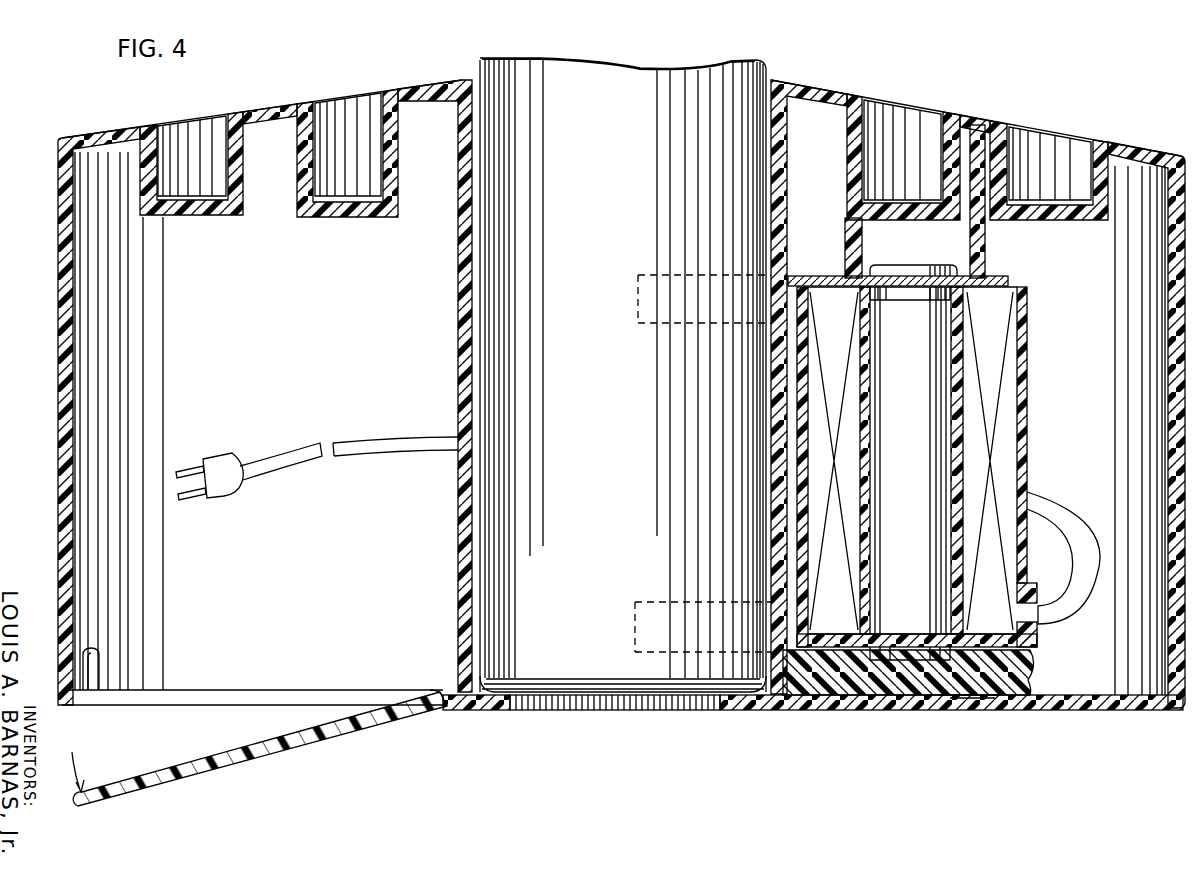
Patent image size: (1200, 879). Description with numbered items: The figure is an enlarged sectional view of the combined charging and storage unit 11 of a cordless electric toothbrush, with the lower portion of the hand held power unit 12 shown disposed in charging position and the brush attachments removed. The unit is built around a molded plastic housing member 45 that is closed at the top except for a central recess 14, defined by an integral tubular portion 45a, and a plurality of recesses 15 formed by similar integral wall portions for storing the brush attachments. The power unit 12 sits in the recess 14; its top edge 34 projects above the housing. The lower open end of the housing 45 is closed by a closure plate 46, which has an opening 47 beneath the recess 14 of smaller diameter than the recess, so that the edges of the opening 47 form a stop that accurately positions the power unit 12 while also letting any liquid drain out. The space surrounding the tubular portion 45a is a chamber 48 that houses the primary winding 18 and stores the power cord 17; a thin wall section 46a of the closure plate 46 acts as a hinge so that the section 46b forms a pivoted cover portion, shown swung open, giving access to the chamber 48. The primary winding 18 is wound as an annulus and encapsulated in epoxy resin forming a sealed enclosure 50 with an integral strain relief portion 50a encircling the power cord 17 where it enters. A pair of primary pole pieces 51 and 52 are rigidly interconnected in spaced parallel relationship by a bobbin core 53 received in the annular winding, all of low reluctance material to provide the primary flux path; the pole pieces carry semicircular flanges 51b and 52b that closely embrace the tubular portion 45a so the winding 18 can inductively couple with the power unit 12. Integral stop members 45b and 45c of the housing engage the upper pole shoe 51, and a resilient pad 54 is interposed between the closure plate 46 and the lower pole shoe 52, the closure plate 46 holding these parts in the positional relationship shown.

The combined charging and storage unit 11 is at (664, 747).
The hand held power unit 12 is at (515, 58).
The recess 14 is at (478, 92).
The recesses 15 is at (162, 128).
The power cord 17 is at (372, 440).
The primary winding 18 is at (1000, 348).
The top edge of central cylinder 34 is at (670, 76).
The molded housing member 45 is at (58, 350).
The tubular portion 45a is at (458, 298).
The stop member 45b is at (845, 228).
The stop member 45c is at (986, 233).
The closure plate 46 is at (890, 703).
The thin wall section 46a is at (444, 709).
The pivoted cover portion 46b is at (206, 782).
The opening 47 is at (515, 699).
The chamber 48 is at (273, 601).
The enclosure 50 is at (1027, 318).
The strain relief portion 50a is at (1033, 630).
The primary pole piece 51 is at (990, 284).
The semicircular flange 51b is at (653, 277).
The primary pole piece 52 is at (815, 694).
The semicircular flange 52b is at (657, 602).
The bobbin core 53 is at (945, 393).
The resilient pad 54 is at (965, 698).